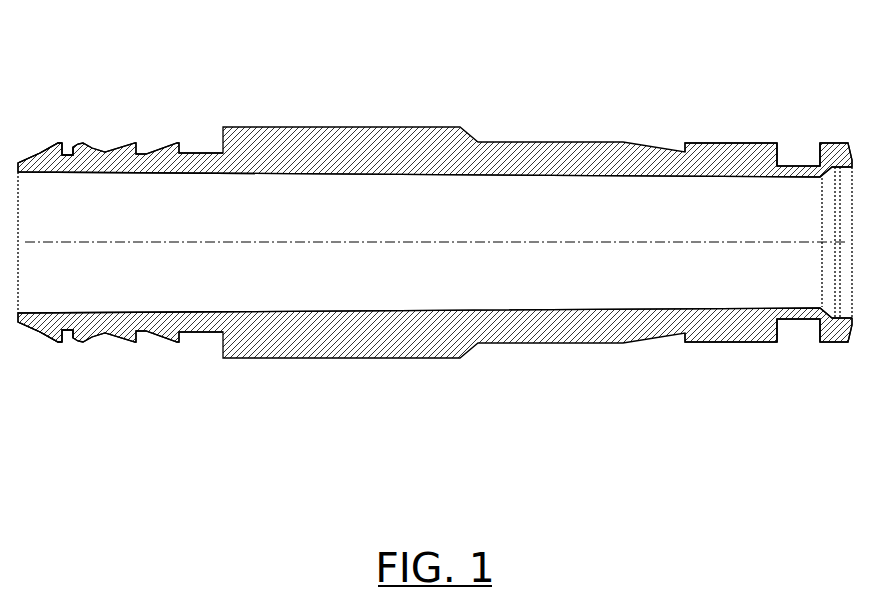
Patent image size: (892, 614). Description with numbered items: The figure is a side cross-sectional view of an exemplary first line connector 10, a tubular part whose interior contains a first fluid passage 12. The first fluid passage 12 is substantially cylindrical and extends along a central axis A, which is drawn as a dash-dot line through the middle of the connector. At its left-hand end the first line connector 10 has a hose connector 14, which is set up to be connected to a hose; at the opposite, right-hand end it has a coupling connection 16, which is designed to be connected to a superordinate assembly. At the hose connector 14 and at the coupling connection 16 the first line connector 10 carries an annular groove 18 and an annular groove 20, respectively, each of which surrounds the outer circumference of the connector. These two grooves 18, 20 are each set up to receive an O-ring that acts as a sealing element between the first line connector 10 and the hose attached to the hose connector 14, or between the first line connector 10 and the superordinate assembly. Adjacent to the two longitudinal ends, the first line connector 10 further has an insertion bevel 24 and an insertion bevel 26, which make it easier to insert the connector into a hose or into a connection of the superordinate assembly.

The first line connector 10 is at (430, 64).
The first fluid passage 12 is at (513, 205).
The central axis A is at (252, 243).
The hose connector 14 is at (150, 157).
The coupling connection 16 is at (702, 168).
The annular groove 18 is at (73, 157).
The annular groove 20 is at (788, 158).
The insertion bevel 24 is at (28, 156).
The insertion bevel 26 is at (843, 157).